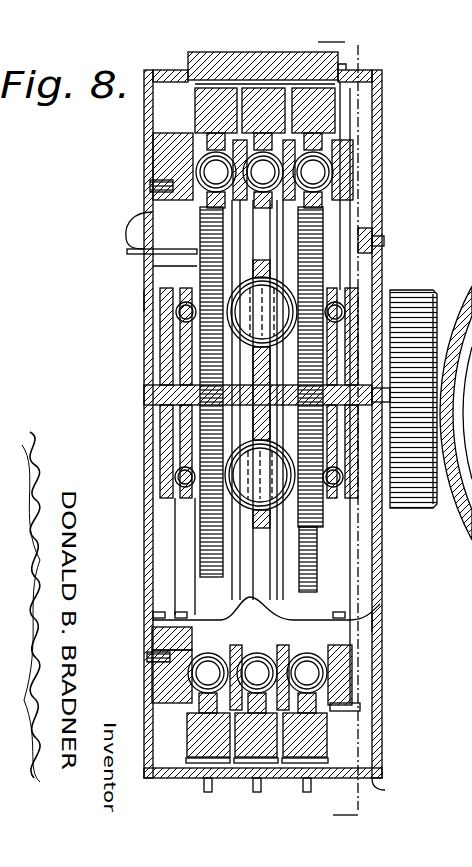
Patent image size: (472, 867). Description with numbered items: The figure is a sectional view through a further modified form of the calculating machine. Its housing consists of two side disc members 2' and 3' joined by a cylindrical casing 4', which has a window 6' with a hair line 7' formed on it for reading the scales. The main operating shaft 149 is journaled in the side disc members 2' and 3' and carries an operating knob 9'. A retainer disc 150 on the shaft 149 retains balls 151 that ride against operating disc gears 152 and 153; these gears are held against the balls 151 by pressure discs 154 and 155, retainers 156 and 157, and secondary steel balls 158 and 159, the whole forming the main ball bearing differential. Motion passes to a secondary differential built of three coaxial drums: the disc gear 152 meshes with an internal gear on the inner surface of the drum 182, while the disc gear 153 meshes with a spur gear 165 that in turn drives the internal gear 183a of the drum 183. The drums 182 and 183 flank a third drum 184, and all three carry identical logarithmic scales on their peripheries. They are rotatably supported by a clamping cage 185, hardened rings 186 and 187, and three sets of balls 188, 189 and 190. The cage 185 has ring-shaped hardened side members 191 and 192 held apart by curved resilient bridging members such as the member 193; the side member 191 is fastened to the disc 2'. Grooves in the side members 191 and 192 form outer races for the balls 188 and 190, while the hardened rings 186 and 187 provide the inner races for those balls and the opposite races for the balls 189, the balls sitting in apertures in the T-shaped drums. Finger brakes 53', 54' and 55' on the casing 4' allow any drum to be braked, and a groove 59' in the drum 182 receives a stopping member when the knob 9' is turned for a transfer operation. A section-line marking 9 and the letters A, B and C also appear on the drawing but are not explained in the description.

The drum 182 is at (197, 118).
The drum 183 is at (378, 108).
The internal gear 183a is at (355, 185).
The third drum 184 is at (268, 80).
The clamping cage 185 is at (172, 598).
The hardened ring 186 is at (165, 630).
The hardened ring 187 is at (380, 604).
The balls 188 is at (160, 668).
The balls 189 is at (360, 710).
The balls 190 is at (360, 145).
The hardened side member 191 is at (152, 155).
The hardened side member 192 is at (370, 150).
The bridging member 193 is at (350, 615).
The shaft 149 is at (144, 393).
The retainer disc 150 is at (250, 535).
The balls 151 is at (261, 393).
The operating disc gear 152 is at (200, 525).
The operating disc gear 153 is at (340, 512).
The pressure disc 154 is at (165, 482).
The pressure disc 155 is at (340, 290).
The retainer 156 is at (185, 300).
The retainer 157 is at (352, 262).
The secondary steel ball 158 is at (168, 318).
The secondary steel ball 159 is at (345, 304).
The spur gear 165 is at (372, 232).
The side disc member 2' is at (126, 301).
The side disc member 3' is at (391, 622).
The cylindrical casing 4' is at (386, 788).
The window 6' is at (207, 117).
The hair line 7' is at (258, 120).
The section line 9 is at (340, 427).
The operating knob 9' is at (426, 395).
The finger brake 53' is at (208, 734).
The finger brake 54' is at (258, 734).
The finger brake 55' is at (313, 726).
The groove 59' is at (143, 264).
The plate A is at (205, 84).
The third plunger B is at (290, 85).
The flange step C is at (346, 70).